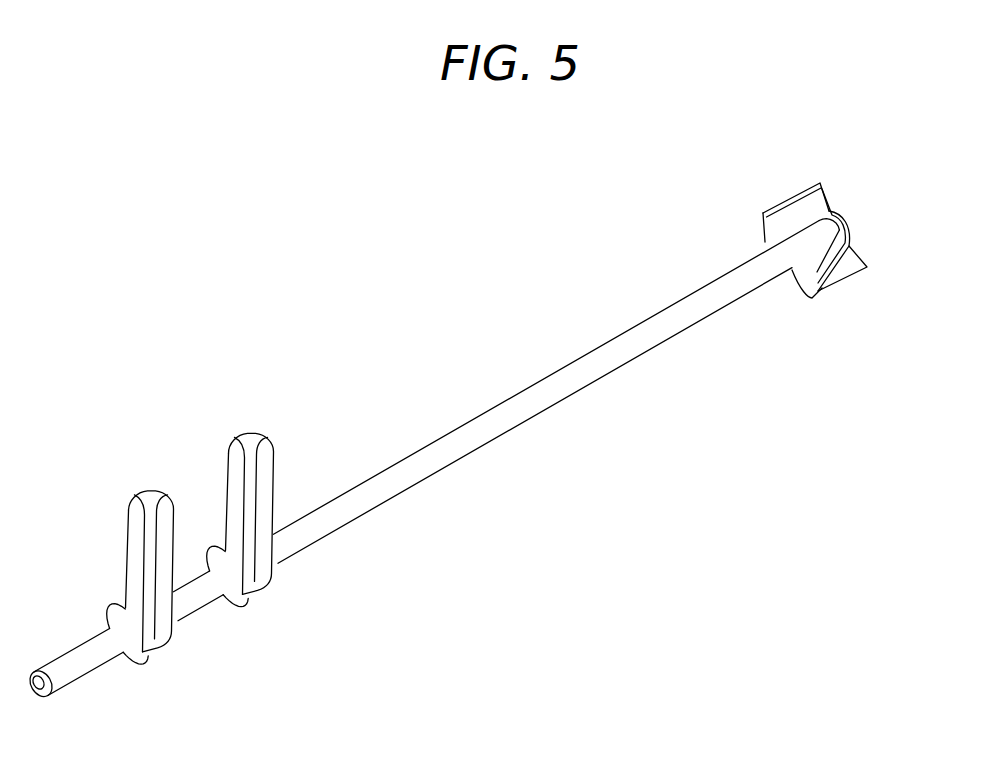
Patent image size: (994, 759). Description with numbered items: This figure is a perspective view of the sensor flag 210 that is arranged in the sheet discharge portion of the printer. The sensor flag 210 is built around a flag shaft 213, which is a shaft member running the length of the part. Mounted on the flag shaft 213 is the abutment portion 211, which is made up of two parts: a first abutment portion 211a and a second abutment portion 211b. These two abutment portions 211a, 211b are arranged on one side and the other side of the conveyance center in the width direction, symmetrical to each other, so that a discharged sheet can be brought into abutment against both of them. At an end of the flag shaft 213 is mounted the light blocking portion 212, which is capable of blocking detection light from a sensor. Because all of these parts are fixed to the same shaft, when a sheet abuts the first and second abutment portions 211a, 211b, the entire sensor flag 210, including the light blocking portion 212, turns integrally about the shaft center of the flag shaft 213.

The sensor flag 210 is at (489, 384).
The abutment portion 211 is at (273, 310).
The first abutment portion 211a is at (134, 532).
The second abutment portion 211b is at (270, 476).
The light blocking portion 212 is at (845, 267).
The flag shaft 213 is at (553, 392).